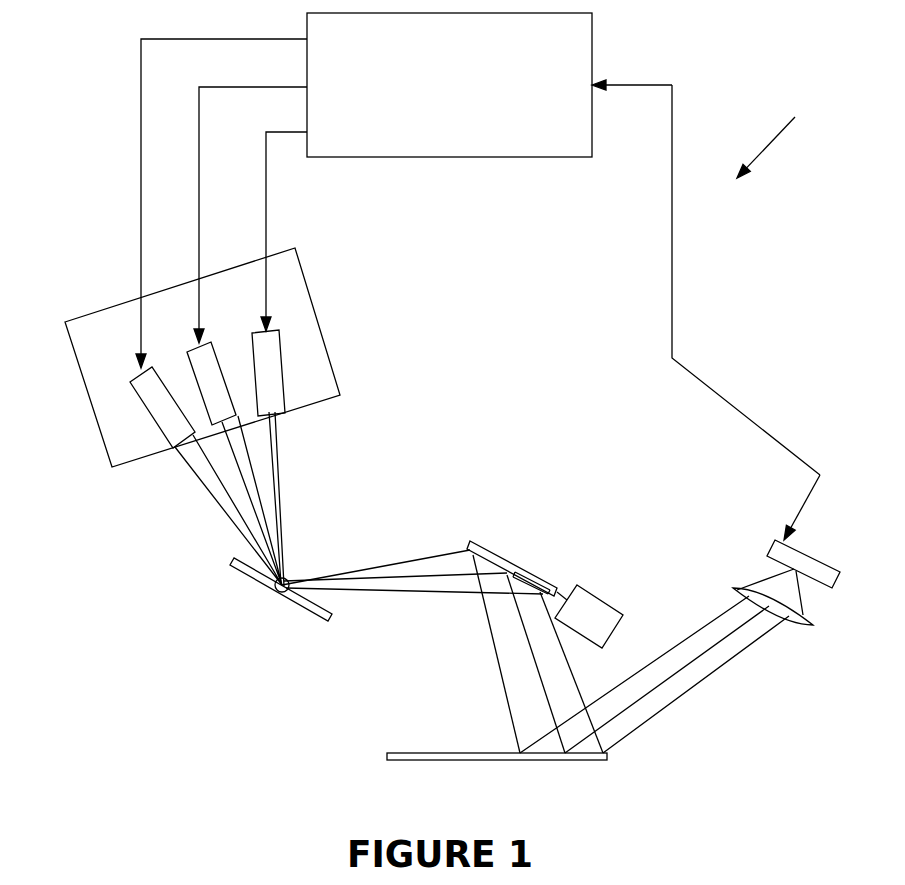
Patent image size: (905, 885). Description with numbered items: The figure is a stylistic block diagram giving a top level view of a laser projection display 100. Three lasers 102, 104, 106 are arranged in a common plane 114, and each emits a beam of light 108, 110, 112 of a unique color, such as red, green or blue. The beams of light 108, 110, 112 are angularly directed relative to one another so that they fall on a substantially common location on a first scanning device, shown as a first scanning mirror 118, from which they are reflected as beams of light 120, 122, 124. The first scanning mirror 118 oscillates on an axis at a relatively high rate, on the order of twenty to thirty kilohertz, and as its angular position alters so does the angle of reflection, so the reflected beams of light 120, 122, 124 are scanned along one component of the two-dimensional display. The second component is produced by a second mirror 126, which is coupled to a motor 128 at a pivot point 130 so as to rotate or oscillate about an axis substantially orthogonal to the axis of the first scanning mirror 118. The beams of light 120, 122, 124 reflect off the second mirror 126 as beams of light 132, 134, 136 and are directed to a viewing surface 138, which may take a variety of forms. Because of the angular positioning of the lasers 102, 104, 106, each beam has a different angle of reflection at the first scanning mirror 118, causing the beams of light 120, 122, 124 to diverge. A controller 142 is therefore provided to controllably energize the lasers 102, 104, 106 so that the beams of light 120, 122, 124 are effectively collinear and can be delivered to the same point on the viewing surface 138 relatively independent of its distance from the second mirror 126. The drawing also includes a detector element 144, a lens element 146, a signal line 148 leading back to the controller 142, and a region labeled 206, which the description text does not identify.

The laser projection display 100 is at (778, 134).
The laser 102 is at (147, 397).
The laser 104 is at (212, 355).
The laser 106 is at (277, 347).
The beam of light 108 is at (203, 468).
The beam of light 110 is at (242, 463).
The beam of light 112 is at (277, 495).
The common plane 114 is at (95, 312).
The first scanning mirror 118 is at (313, 608).
The beam of light 120 is at (358, 578).
The beam of light 122 is at (410, 572).
The beam of light 124 is at (495, 535).
The second mirror 126 is at (492, 555).
The motor 128 is at (607, 612).
The pivot point 130 is at (562, 592).
The beam of light 132 is at (577, 675).
The beam of light 134 is at (545, 695).
The beam of light 136 is at (498, 668).
The viewing surface 138 is at (588, 762).
The controller 142 is at (430, 123).
The detector 144 is at (832, 577).
The collection lens 146 is at (803, 623).
The detector signal line 148 is at (720, 395).
The measurement region 206 is at (495, 327).